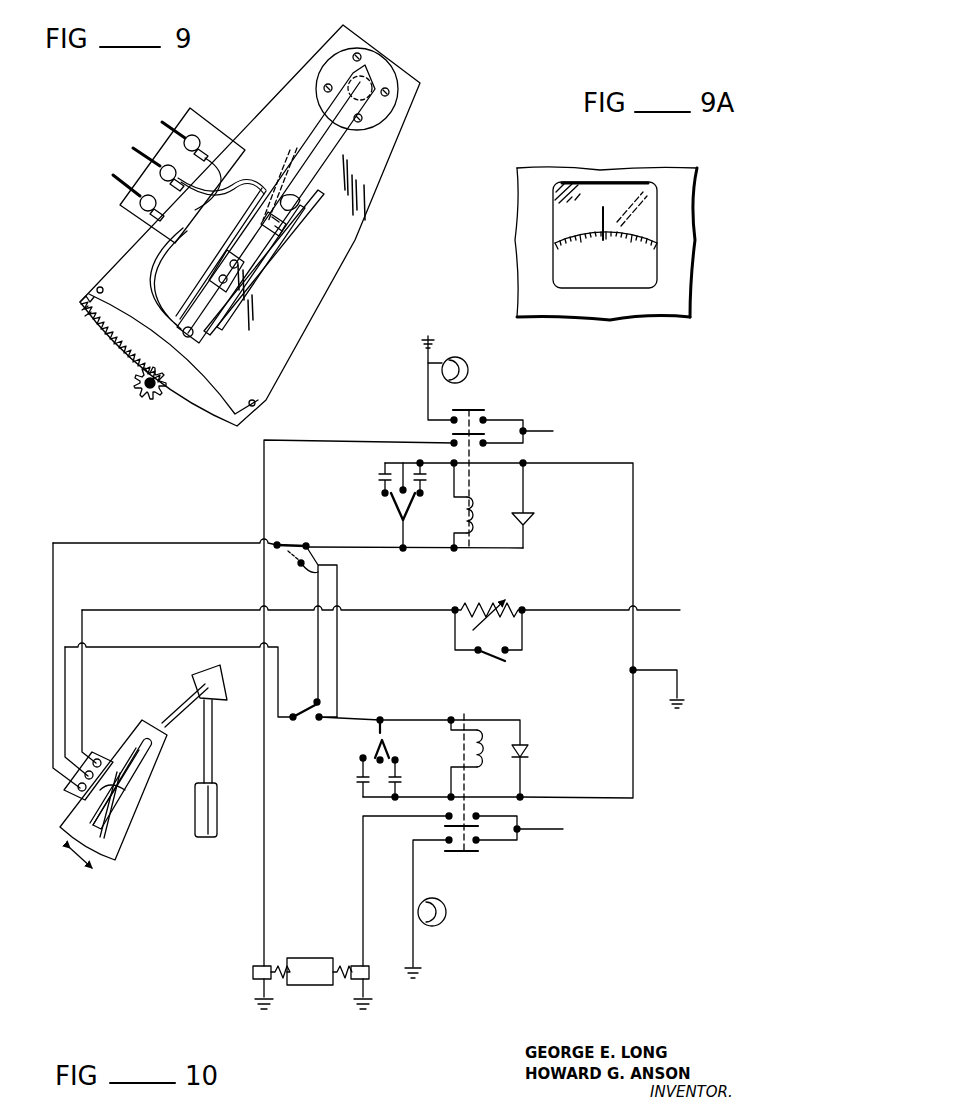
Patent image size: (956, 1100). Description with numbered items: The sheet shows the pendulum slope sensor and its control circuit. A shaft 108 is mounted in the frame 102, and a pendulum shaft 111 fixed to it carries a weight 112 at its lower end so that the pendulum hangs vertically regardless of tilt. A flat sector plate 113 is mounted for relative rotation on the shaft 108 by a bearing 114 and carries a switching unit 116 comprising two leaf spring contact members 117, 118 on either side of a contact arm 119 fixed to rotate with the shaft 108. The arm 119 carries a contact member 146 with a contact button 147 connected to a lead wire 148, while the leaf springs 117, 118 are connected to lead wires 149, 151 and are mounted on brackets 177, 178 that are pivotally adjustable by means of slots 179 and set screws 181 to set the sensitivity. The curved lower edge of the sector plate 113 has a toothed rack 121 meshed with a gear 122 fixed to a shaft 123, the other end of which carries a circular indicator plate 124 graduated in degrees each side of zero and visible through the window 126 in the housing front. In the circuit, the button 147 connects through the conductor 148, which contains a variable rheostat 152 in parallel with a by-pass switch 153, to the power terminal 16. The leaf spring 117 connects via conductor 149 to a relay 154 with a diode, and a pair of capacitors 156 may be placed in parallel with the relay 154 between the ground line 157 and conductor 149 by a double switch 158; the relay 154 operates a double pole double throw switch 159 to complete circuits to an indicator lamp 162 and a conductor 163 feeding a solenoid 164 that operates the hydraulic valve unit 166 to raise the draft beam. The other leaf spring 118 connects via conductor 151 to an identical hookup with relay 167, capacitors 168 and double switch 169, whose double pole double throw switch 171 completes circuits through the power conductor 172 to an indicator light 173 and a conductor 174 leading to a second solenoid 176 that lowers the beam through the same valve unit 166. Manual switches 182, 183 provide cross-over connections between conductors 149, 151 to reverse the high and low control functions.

In FIG. 10, the positive supply terminal 16 is at (552, 428).
In FIG. 9A, the frame 102 is at (641, 190).
In FIG. 9, the shaft 108 is at (375, 74).
In FIG. 10, the shaft 108 is at (182, 715).
In FIG. 10, the pendulum shaft 111 is at (213, 728).
In FIG. 10, the weight 112 is at (200, 840).
In FIG. 9, the sector plate 113 is at (314, 316).
In FIG. 10, the sector plate 113 is at (120, 840).
In FIG. 9, the bearing 114 is at (372, 58).
In FIG. 9, the switching unit 116 is at (270, 287).
In FIG. 9, the leaf spring contact member 117 is at (210, 273).
In FIG. 10, the leaf spring contact member 117 is at (88, 822).
In FIG. 9, the leaf spring contact member 118 is at (233, 298).
In FIG. 10, the leaf spring contact member 118 is at (123, 813).
In FIG. 9, the contact arm 119 is at (327, 145).
In FIG. 10, the contact arm 119 is at (143, 761).
In FIG. 9, the toothed rack 121 is at (126, 348).
In FIG. 9, the gear 122 is at (138, 396).
In FIG. 9, the shaft 123 is at (154, 402).
In FIG. 9A, the indicator plate 124 is at (645, 282).
In FIG. 9A, the window 126 is at (657, 210).
In FIG. 9, the contact member 146 is at (203, 297).
In FIG. 9, the contact button 147 is at (196, 340).
In FIG. 9, the lead wire 148 is at (167, 120).
In FIG. 10, the lead wire 148 is at (83, 691).
In FIG. 9, the lead wire 149 is at (112, 175).
In FIG. 10, the lead wire 149 is at (62, 760).
In FIG. 9, the lead wire 151 is at (132, 146).
In FIG. 10, the lead wire 151 is at (50, 728).
In FIG. 10, the variable rheostat 152 is at (515, 608).
In FIG. 10, the by-pass switch 153 is at (491, 660).
In FIG. 10, the relay 154 is at (467, 522).
In FIG. 10, the capacitors 156 is at (378, 474).
In FIG. 10, the ground line 157 is at (605, 465).
In FIG. 10, the double switch 158 is at (394, 510).
In FIG. 10, the double pole double throw switch 159 is at (453, 428).
In FIG. 10, the indicator lamp 162 is at (465, 362).
In FIG. 10, the conductor 163 is at (268, 478).
In FIG. 10, the solenoid 164 is at (252, 972).
In FIG. 10, the hydraulic valve unit 166 is at (320, 985).
In FIG. 10, the relay 167 is at (463, 752).
In FIG. 10, the capacitors 168 is at (385, 785).
In FIG. 10, the double switch 169 is at (386, 748).
In FIG. 10, the double pole double throw switch 171 is at (447, 830).
In FIG. 10, the power system conductor 172 is at (545, 834).
In FIG. 10, the indicator light 173 is at (446, 918).
In FIG. 10, the conductor 174 is at (362, 883).
In FIG. 10, the second solenoid 176 is at (370, 980).
In FIG. 9, the bracket 177 is at (262, 190).
In FIG. 9, the bracket 178 is at (297, 204).
In FIG. 9, the slots 179 is at (286, 160).
In FIG. 9, the set screws 181 is at (279, 238).
In FIG. 10, the manual switch 182 is at (290, 545).
In FIG. 10, the manual switch 183 is at (303, 721).